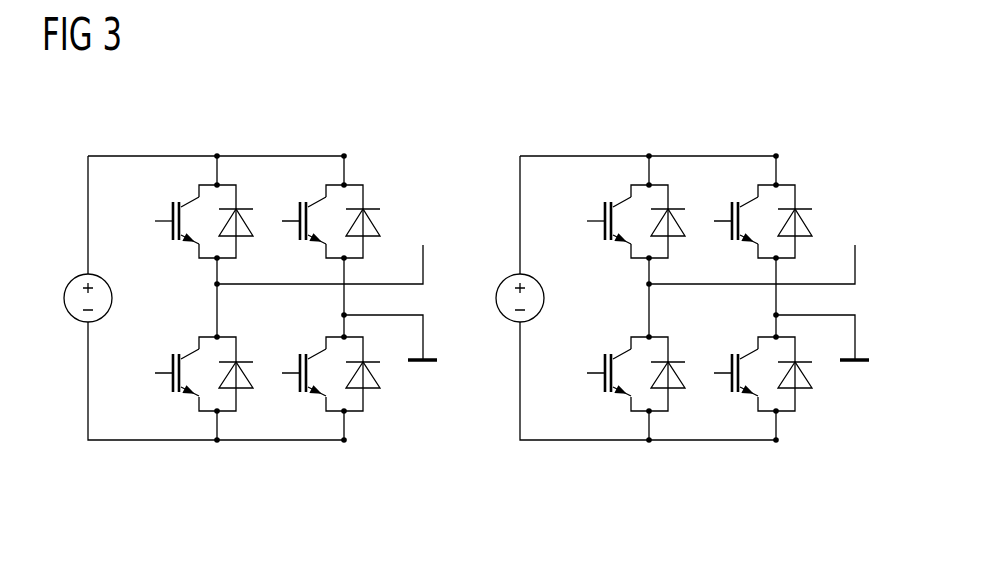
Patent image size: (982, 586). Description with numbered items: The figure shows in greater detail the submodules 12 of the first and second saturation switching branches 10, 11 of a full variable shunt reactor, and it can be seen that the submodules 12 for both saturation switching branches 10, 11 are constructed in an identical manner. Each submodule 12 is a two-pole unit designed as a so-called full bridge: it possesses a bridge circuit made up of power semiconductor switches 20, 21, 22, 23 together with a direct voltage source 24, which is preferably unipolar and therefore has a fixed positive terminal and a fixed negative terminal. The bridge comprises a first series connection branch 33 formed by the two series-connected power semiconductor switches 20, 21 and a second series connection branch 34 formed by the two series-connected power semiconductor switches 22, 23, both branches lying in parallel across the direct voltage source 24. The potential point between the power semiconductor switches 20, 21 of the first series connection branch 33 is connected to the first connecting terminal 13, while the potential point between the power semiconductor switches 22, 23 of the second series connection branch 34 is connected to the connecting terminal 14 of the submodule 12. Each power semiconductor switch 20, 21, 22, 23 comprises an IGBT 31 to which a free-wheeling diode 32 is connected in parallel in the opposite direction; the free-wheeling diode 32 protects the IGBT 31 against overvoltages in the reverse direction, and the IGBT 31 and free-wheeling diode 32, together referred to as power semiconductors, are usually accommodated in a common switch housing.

The first saturation switching branch 10 is at (407, 178).
The second saturation switching branch 11 is at (838, 178).
The submodule 12 is at (88, 457).
The first connecting terminal 13 is at (423, 258).
The connecting terminal 14 is at (423, 343).
The power semiconductor switch 20 is at (163, 191).
The power semiconductor switch 21 is at (161, 409).
The power semiconductor switch 22 is at (293, 190).
The power semiconductor switch 23 is at (289, 409).
The direct voltage source 24 is at (67, 288).
The IGBT 31 is at (172, 210).
The free-wheeling diode 32 is at (253, 214).
The first series connection branch 33 is at (193, 178).
The second series connection branch 34 is at (322, 178).